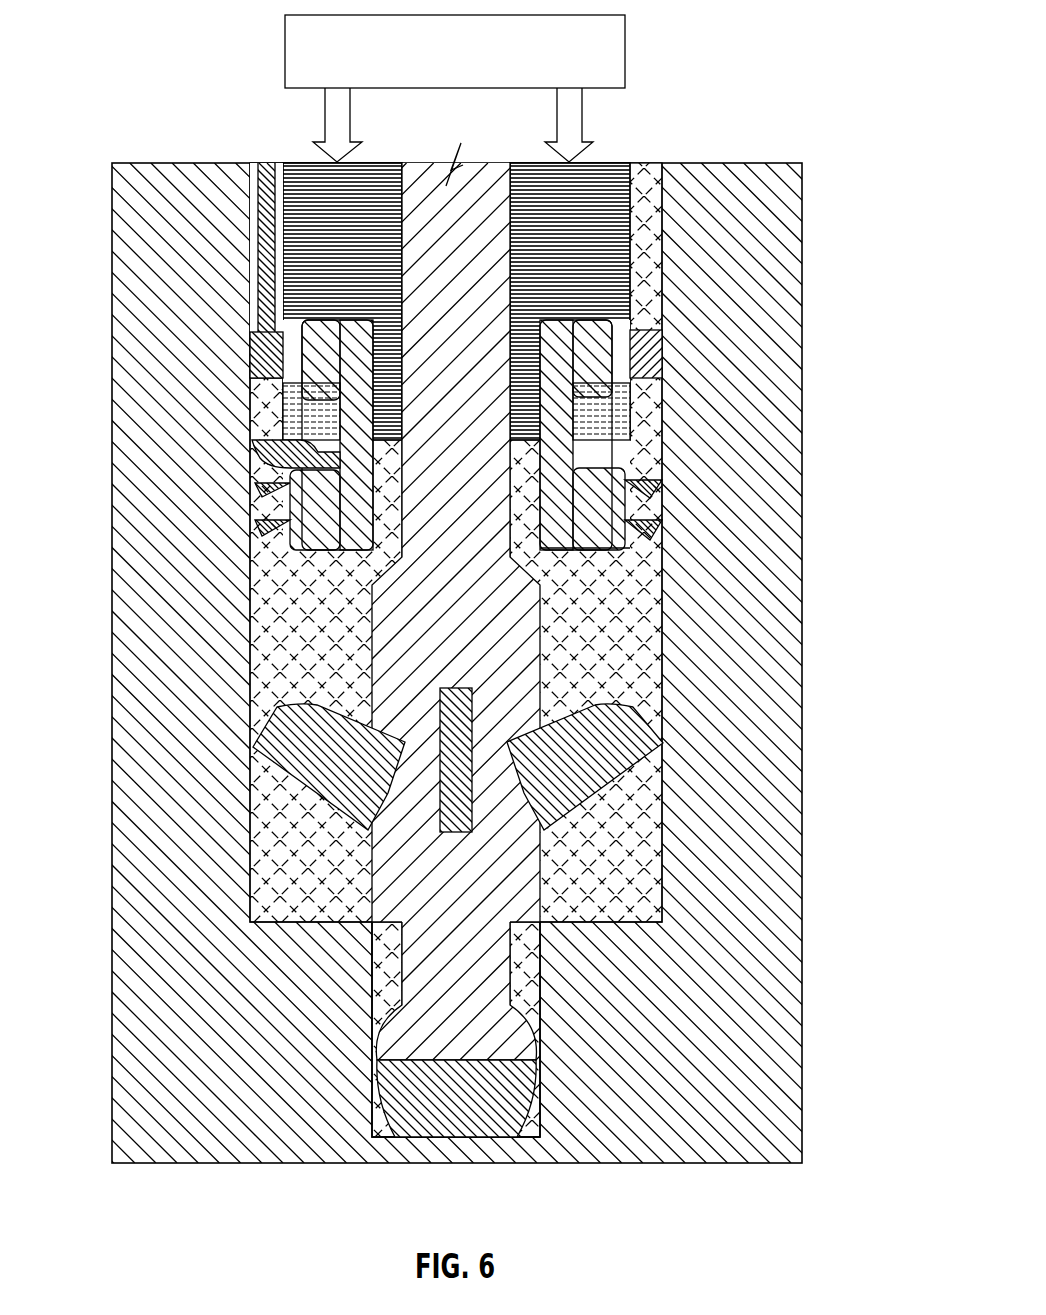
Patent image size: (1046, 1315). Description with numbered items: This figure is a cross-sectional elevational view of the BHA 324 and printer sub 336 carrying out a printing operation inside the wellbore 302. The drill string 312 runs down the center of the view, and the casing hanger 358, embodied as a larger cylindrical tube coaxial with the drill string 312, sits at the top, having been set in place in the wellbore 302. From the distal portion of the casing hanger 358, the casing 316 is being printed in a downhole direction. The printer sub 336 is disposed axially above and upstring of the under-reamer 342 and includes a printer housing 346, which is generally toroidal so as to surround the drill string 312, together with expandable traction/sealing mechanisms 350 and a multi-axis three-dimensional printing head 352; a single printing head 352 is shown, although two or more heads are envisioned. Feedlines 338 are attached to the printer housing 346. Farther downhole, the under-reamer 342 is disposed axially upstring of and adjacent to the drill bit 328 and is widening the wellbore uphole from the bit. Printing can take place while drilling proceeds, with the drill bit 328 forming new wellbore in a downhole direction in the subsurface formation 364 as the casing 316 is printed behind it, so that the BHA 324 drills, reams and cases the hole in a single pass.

The wellbore 302 is at (332, 650).
The drill string 312 is at (477, 250).
The casing 316 is at (364, 250).
The BHA 324 is at (366, 866).
The drill bit 328 is at (510, 1140).
The printer sub 336 is at (812, 318).
The feedlines 338 is at (253, 227).
The under-reamer 342 is at (815, 683).
The printer housing 346 is at (625, 548).
The expandable traction/sealing mechanisms 350 is at (262, 332).
The 3D printing head 352 is at (288, 445).
The casing hanger 358 is at (626, 51).
The subsurface formation 364 is at (202, 728).